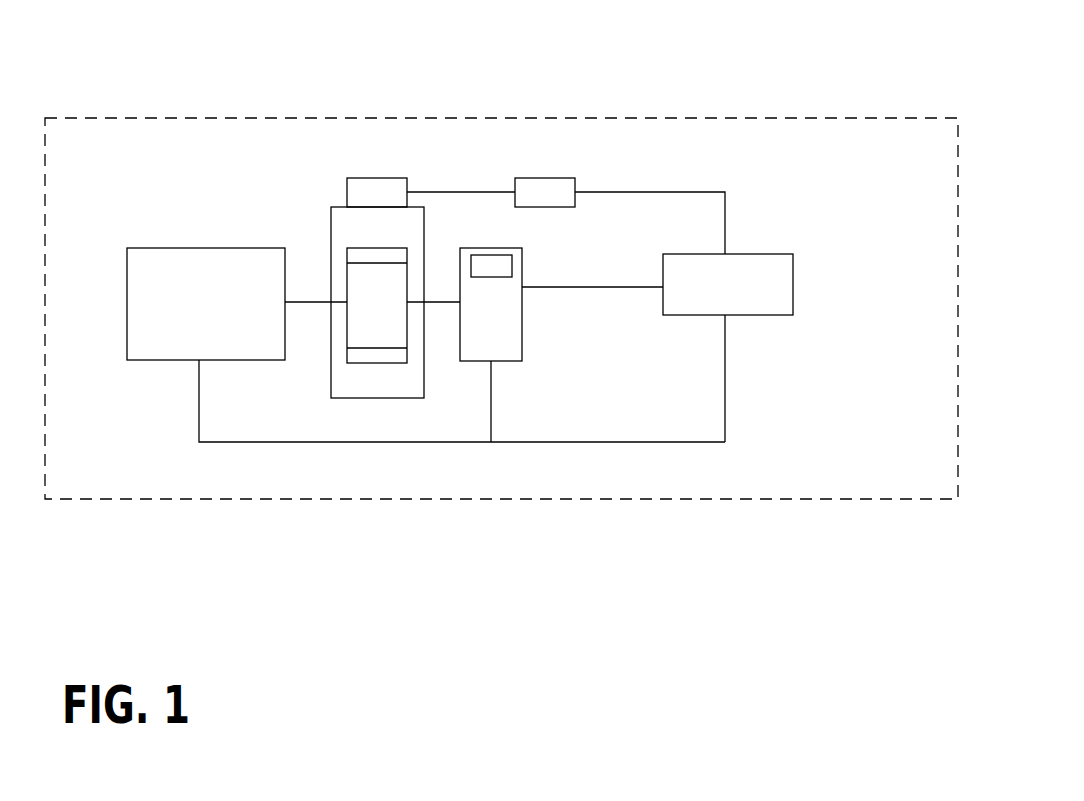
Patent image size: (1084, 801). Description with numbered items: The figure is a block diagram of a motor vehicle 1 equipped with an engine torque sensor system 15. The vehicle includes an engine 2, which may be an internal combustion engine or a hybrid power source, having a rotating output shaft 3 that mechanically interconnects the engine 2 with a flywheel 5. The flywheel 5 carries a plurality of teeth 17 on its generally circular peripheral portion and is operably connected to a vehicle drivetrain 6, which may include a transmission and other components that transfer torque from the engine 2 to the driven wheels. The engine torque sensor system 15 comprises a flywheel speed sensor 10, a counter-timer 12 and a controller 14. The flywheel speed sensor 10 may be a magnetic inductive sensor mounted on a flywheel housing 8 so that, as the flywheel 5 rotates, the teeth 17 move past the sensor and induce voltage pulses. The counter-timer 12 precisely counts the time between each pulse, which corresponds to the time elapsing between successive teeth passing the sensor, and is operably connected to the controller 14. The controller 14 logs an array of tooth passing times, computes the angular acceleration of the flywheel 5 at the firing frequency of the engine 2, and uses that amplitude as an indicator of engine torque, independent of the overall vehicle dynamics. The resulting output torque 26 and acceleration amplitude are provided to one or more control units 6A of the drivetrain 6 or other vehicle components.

The motor vehicle 1 is at (191, 114).
The engine 2 is at (193, 316).
The rotating output shaft 3 is at (310, 306).
The flywheel 5 is at (371, 316).
The vehicle drivetrain 6 is at (483, 316).
The control unit 6A is at (513, 264).
The flywheel housing 8 is at (330, 217).
The flywheel speed sensor 10 is at (382, 177).
The counter-timer 12 is at (541, 178).
The controller 14 is at (795, 293).
The engine torque sensor system 15 is at (783, 216).
The teeth 17 is at (362, 248).
The output torque 26 is at (593, 443).